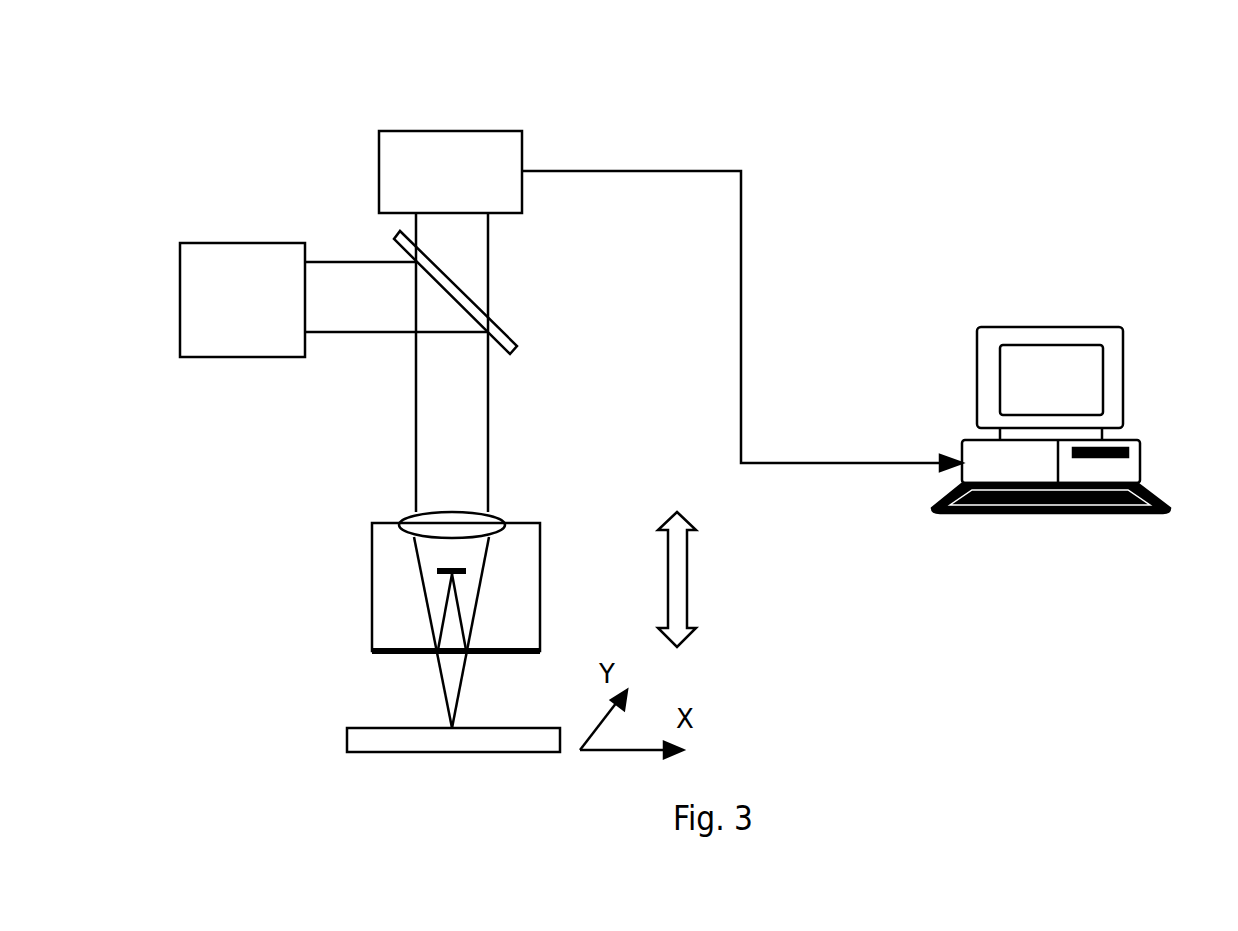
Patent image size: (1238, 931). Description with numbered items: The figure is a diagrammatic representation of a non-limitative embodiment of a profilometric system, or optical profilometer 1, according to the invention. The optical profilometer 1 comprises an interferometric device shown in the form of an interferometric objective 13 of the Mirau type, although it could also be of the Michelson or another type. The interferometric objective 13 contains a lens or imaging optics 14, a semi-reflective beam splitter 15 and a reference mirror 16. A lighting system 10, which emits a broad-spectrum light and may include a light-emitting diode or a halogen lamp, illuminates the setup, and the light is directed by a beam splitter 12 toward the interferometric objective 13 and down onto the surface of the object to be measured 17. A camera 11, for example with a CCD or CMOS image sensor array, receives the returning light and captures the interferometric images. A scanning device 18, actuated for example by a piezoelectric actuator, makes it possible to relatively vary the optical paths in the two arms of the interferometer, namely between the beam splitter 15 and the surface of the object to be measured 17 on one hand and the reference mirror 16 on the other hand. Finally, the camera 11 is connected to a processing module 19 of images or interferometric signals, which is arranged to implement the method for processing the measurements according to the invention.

The optical profilometer 1 is at (178, 165).
The lighting system 10 is at (180, 300).
The camera 11 is at (447, 131).
The beam splitter mirror 12 is at (515, 348).
The interferometric objective 13 is at (372, 588).
The imaging optics 14 is at (372, 524).
The semi-reflective beam splitter 15 is at (372, 653).
The reference mirror 16 is at (472, 570).
The object to be measured 17 is at (347, 728).
The scanning device 18 is at (687, 581).
The processing module 19 is at (1123, 378).